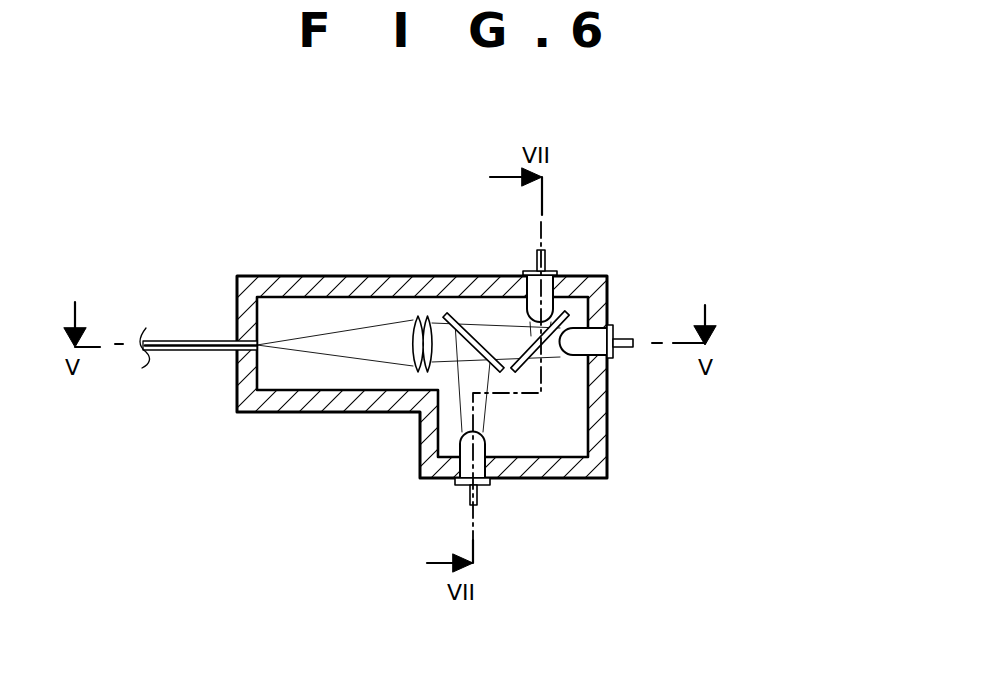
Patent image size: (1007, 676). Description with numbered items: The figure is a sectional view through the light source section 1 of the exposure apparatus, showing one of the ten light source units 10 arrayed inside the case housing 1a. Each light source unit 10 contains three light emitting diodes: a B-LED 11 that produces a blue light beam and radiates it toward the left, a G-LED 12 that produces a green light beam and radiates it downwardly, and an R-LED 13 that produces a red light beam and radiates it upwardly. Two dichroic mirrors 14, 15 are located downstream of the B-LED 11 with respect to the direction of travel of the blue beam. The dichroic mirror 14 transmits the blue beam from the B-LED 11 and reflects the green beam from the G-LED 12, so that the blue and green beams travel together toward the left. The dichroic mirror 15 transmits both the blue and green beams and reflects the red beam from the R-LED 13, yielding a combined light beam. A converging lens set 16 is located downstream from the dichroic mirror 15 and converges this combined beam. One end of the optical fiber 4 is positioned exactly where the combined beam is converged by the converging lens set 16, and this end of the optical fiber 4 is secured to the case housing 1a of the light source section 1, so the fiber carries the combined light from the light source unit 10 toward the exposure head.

The light source section 1 is at (435, 354).
The case housing 1a is at (435, 389).
The optical fiber 4 is at (187, 352).
The light source unit 10 is at (565, 450).
The B-LED 11 is at (595, 352).
The G-LED 12 is at (548, 288).
The R-LED 13 is at (453, 472).
The dichroic mirror 14 is at (550, 353).
The dichroic mirror 15 is at (464, 318).
The converging lens set 16 is at (418, 316).